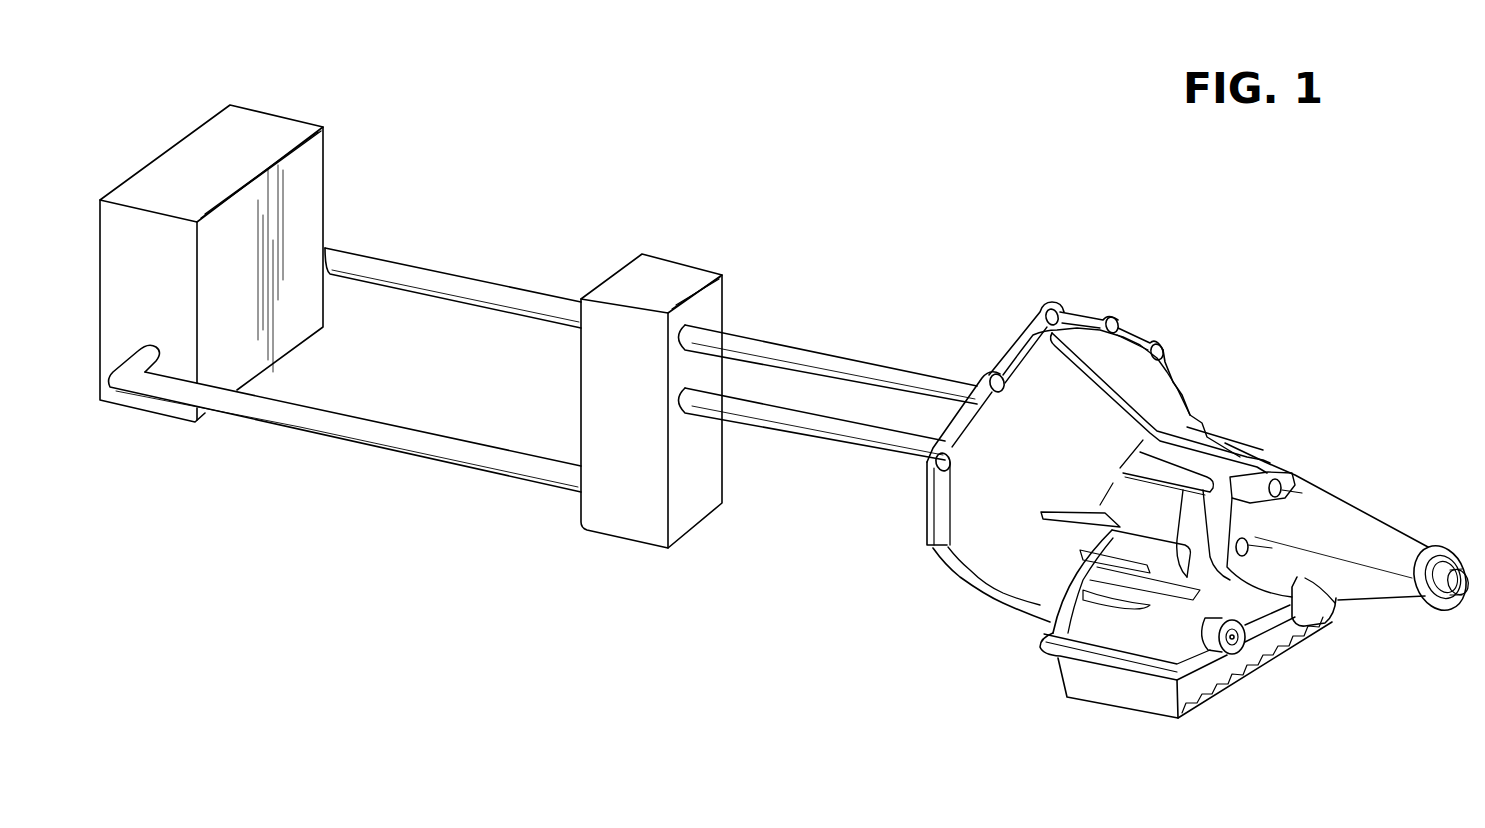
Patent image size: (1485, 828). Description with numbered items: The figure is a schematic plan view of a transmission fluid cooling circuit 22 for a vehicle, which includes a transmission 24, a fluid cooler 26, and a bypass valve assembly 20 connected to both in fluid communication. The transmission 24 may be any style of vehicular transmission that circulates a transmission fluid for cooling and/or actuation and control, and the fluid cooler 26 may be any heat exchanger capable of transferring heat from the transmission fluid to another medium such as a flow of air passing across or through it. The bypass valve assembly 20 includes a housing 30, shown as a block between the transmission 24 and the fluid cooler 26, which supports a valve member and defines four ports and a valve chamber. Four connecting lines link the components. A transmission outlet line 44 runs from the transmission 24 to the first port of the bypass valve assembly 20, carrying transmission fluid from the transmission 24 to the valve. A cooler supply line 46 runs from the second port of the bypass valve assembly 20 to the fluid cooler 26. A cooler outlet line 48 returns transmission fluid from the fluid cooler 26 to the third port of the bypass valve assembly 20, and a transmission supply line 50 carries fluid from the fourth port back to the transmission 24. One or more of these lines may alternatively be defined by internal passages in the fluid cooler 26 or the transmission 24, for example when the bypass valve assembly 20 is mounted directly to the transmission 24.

The bypass valve assembly 20 is at (668, 396).
The transmission fluid cooling circuit 22 is at (1077, 391).
The transmission 24 is at (1180, 388).
The fluid cooler 26 is at (275, 110).
The housing 30 is at (694, 503).
The transmission outlet line 44 is at (830, 439).
The cooler supply line 46 is at (348, 440).
The cooler outlet line 48 is at (475, 280).
The transmission supply line 50 is at (870, 364).